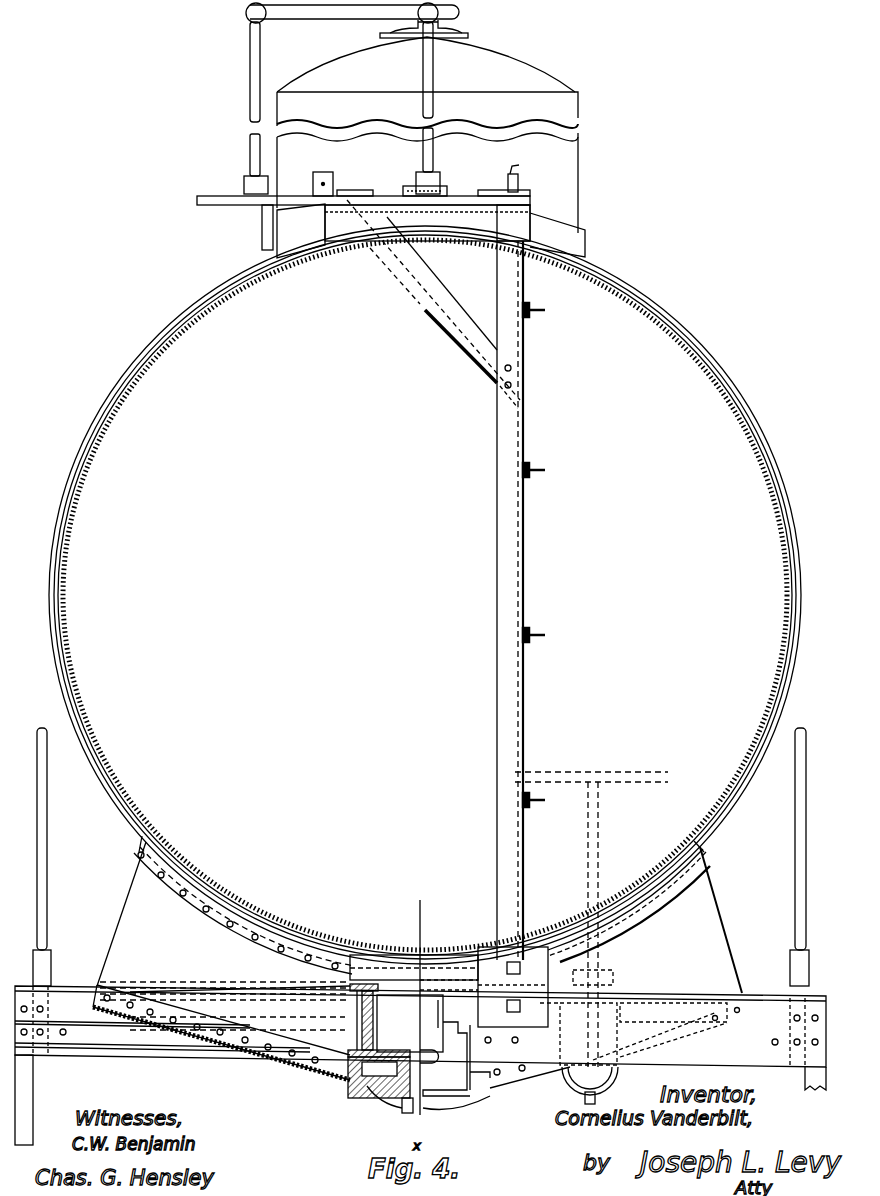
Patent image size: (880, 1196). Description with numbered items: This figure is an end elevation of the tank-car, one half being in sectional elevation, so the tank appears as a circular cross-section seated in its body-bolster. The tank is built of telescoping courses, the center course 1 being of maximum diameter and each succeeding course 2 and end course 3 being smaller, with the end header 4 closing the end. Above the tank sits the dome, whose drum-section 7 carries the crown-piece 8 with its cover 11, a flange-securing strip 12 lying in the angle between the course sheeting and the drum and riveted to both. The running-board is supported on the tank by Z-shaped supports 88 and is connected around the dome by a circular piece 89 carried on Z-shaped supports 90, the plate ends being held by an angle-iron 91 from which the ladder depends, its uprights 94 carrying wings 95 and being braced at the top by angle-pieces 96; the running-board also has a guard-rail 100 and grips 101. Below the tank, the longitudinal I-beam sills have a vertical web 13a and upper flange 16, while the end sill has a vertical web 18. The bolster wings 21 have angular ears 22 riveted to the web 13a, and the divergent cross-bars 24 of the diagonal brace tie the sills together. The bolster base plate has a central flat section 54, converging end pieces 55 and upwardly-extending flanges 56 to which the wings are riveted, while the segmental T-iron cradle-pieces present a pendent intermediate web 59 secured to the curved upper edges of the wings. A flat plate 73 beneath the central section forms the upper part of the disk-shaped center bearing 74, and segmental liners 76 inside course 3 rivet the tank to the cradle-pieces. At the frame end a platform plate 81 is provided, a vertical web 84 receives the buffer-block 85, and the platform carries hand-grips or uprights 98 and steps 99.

The center course 1 is at (143, 360).
The course 2 is at (113, 402).
The end course 3 is at (70, 524).
The end header 4 is at (680, 690).
The drum-section 7 is at (566, 212).
The crown-piece 8 is at (426, 64).
The cover 11 is at (452, 30).
The flange-securing strip 12 is at (607, 244).
The vertical web 13a is at (396, 1018).
The upper flange 16 is at (346, 988).
The vertical web 18 is at (420, 1045).
The plates or wings 21 is at (116, 955).
The angular ears 22 is at (362, 1024).
The divergent cross-bars 24 is at (419, 1046).
The central flat section 54 is at (362, 1098).
The end pieces 55 is at (300, 1068).
The upwardly-extending flanges 56 is at (238, 1032).
The pendent intermediate web 59 is at (368, 960).
The flat plate 73 is at (496, 1093).
The center bearing 74 is at (390, 1108).
The segmental liners 76 is at (200, 872).
The plate 81 is at (662, 988).
The vertical web 84 is at (450, 962).
The buffer-block 85 is at (437, 1067).
The Z-shaped supports 88 is at (405, 222).
The circular piece 89 is at (215, 202).
The Z-shaped supports 90 is at (262, 222).
The angle-iron 91 is at (512, 216).
The uprights 94 is at (510, 443).
The wings 95 is at (532, 313).
The angle-pieces 96 is at (476, 358).
The hand-grips or uprights 98 is at (46, 928).
The steps 99 is at (28, 1098).
The guard-rail 100 is at (318, 14).
The grips 101 is at (517, 172).